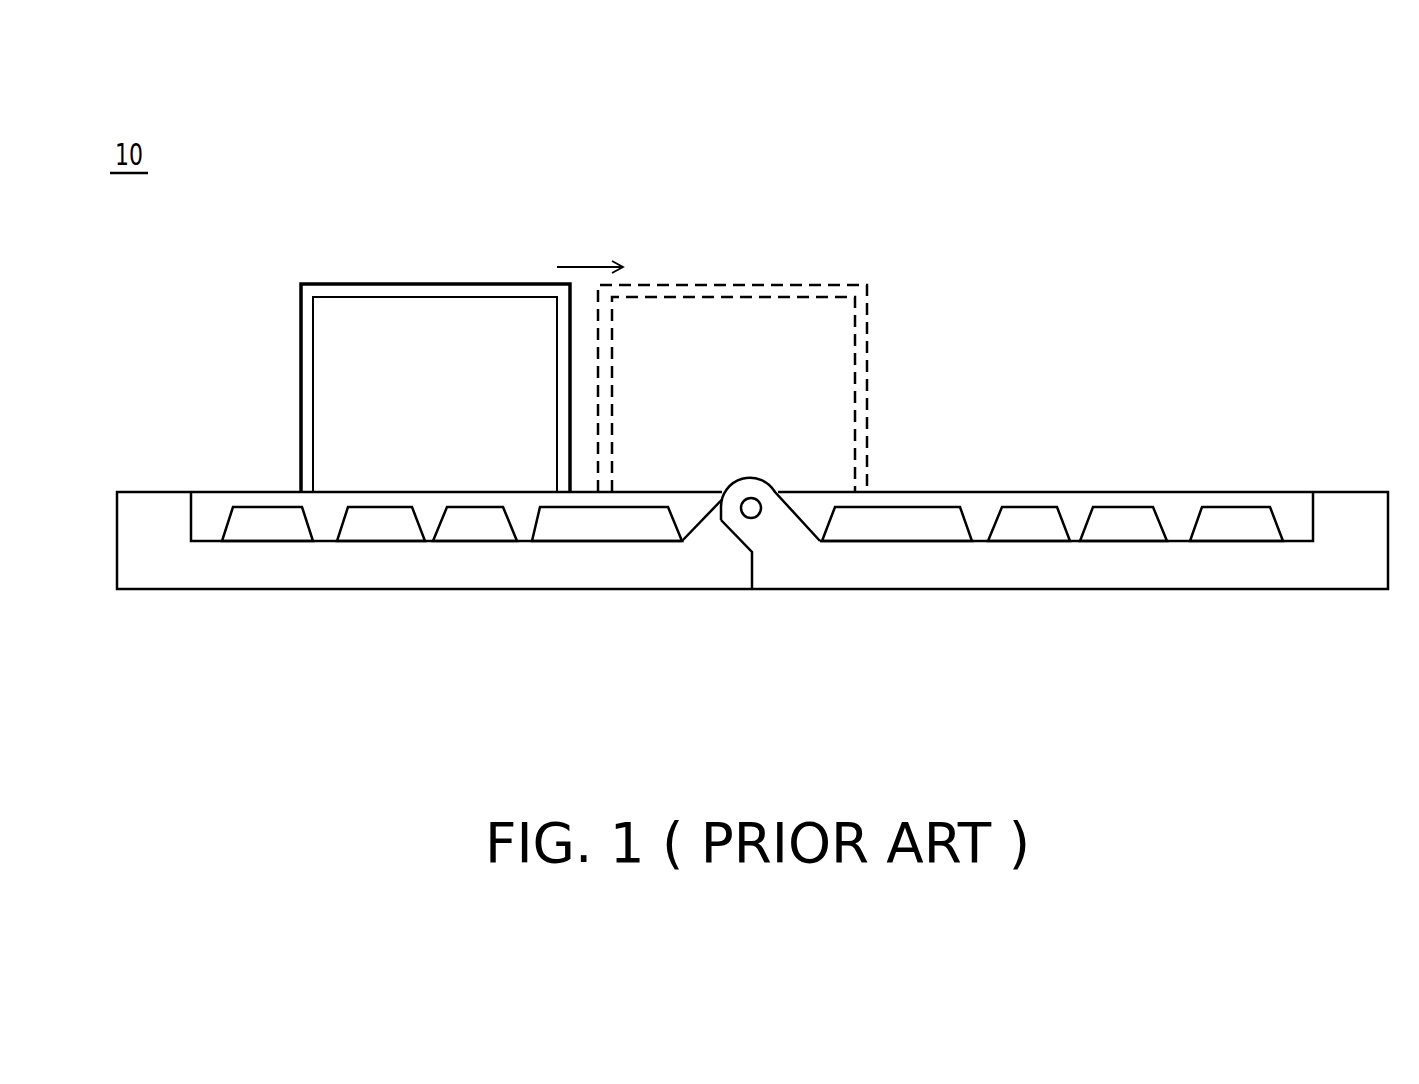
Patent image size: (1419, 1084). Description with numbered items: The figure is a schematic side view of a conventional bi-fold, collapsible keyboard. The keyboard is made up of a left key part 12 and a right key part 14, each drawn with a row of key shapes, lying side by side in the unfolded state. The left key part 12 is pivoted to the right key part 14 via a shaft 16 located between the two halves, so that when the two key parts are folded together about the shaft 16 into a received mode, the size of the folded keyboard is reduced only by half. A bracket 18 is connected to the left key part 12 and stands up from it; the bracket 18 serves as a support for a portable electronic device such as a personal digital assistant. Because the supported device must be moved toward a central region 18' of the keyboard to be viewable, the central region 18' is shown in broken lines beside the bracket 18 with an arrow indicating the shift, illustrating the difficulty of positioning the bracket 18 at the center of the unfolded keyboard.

The left key part 12 is at (372, 572).
The right key part 14 is at (1068, 573).
The shaft 16 is at (750, 500).
The bracket 18 is at (381, 388).
The central region 18' is at (768, 353).